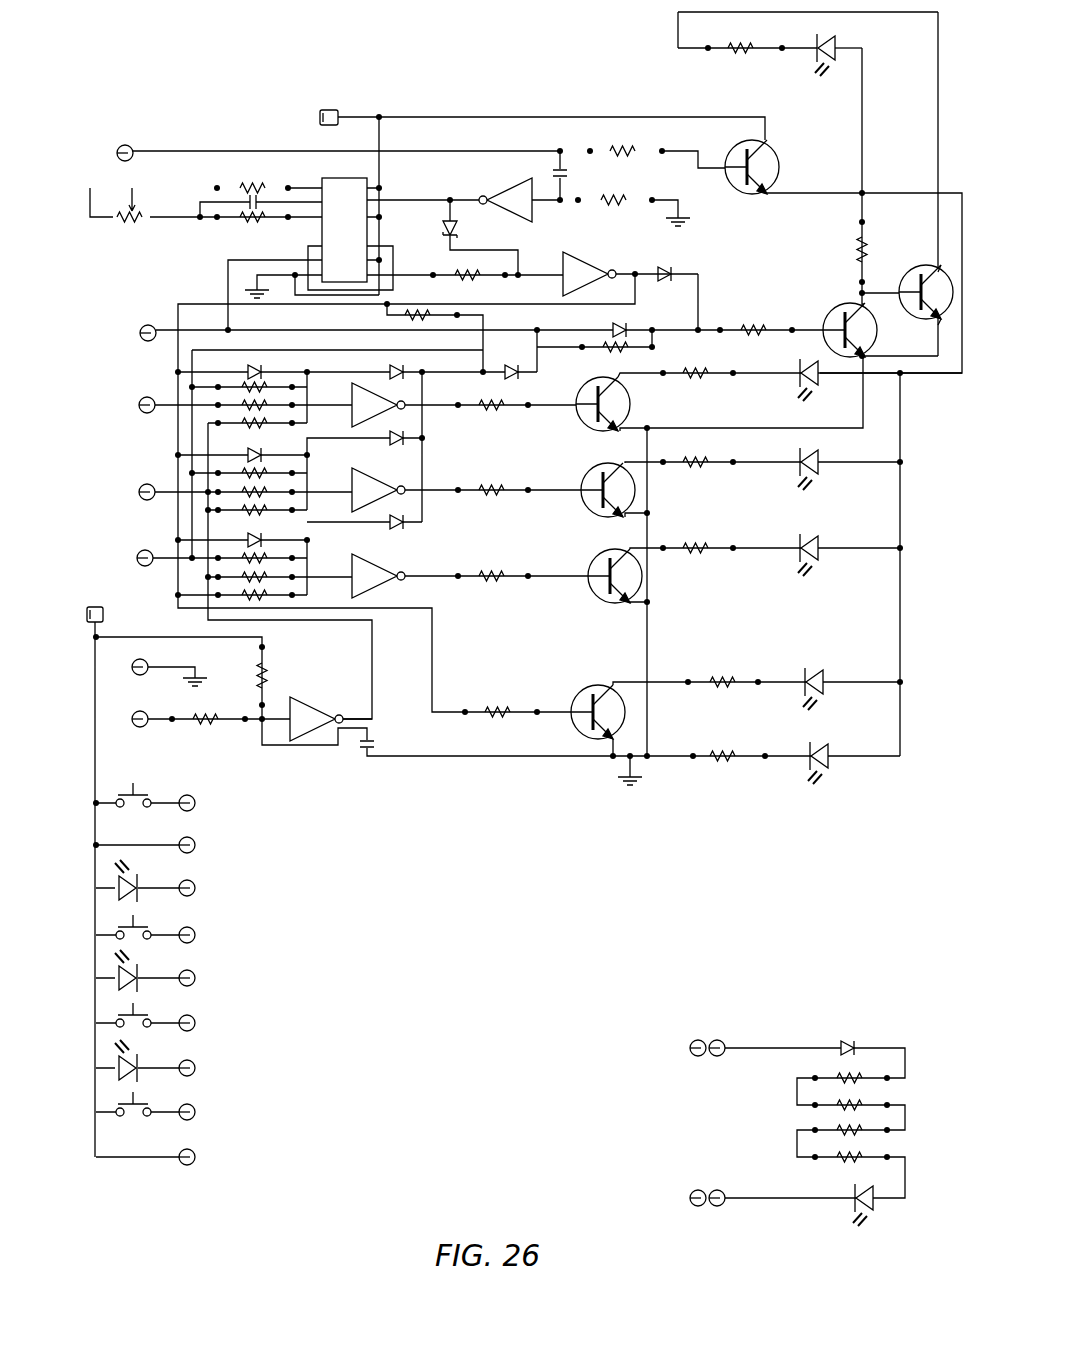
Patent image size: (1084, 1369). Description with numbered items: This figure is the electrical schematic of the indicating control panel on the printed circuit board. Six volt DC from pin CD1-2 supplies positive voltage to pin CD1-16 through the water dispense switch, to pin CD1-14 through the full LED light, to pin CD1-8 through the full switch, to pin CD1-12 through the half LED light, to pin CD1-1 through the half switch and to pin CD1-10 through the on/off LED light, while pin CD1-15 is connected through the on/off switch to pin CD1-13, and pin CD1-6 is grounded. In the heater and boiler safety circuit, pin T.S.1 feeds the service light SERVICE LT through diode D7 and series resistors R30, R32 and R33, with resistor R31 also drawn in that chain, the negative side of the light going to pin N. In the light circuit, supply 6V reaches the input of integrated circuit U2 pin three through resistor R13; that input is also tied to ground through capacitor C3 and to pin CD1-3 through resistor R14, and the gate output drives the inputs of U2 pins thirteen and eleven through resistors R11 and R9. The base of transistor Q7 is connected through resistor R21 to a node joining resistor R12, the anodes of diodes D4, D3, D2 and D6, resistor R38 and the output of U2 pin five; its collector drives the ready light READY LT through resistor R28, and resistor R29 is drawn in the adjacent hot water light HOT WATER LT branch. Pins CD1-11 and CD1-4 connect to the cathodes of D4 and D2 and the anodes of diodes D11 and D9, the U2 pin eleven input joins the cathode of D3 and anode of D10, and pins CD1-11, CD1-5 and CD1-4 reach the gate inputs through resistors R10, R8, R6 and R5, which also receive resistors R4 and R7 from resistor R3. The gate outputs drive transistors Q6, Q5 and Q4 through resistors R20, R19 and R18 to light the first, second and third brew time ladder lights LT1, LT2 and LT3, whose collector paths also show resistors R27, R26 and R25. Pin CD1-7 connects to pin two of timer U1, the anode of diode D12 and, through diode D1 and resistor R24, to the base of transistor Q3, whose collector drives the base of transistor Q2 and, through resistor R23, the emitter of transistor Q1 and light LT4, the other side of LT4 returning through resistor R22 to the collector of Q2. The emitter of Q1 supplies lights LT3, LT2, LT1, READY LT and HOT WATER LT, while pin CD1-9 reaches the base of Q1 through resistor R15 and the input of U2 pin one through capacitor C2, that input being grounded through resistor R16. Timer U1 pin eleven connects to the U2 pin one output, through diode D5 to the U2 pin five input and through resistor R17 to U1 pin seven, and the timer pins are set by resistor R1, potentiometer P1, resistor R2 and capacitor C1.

The six volt supply pin 6V is at (212, 367).
The connector pin CD1-9 is at (119, 144).
The resistor R1 is at (253, 181).
The resistor R2 is at (253, 225).
The capacitor C1 is at (214, 203).
The potentiometer P1 is at (130, 216).
The timer U1 is at (344, 230).
The connector pin CD1-7 is at (129, 324).
The resistor R38 is at (381, 317).
The capacitor C2 is at (547, 167).
The resistor R15 is at (665, 150).
The resistor R16 is at (639, 198).
The diode D5 is at (480, 237).
The resistor R17 is at (469, 285).
The diode D6 is at (666, 266).
The diode D1 is at (604, 321).
The resistor R3 is at (590, 342).
The resistor R24 is at (754, 320).
The integrated circuit U2 is at (453, 459).
The resistor R22 is at (747, 60).
The light LT4 is at (839, 61).
The transistor Q1 is at (767, 167).
The resistor R23 is at (841, 250).
The transistor Q2 is at (915, 293).
The transistor Q3 is at (865, 330).
The connector pin CD1-4 is at (140, 396).
The connector pin CD1-5 is at (140, 484).
The connector pin CD1-11 is at (126, 549).
The diode D2 is at (293, 370).
The diode D3 is at (293, 455).
The diode D4 is at (293, 540).
The resistor R4 is at (289, 388).
The resistor R5 is at (289, 405).
The resistor R6 is at (289, 422).
The resistor R7 is at (289, 473).
The resistor R8 is at (289, 491).
The resistor R9 is at (289, 510).
The resistor R10 is at (295, 558).
The resistor R11 is at (295, 576).
The resistor R12 is at (295, 595).
The diode D9 is at (405, 382).
The diode D10 is at (396, 448).
The diode D11 is at (402, 532).
The diode D12 is at (505, 381).
The resistor R18 is at (493, 414).
The resistor R19 is at (493, 481).
The resistor R20 is at (496, 567).
The transistor Q4 is at (601, 397).
The transistor Q5 is at (603, 481).
The transistor Q6 is at (610, 567).
The resistor R25 is at (698, 364).
The resistor R26 is at (698, 452).
The resistor R27 is at (698, 538).
The third brew time ladder light LT3 is at (802, 381).
The second time ladder light LT2 is at (807, 469).
The first brew time ladder light LT1 is at (809, 555).
The resistor R21 is at (501, 703).
The transistor Q7 is at (596, 706).
The resistor R28 is at (721, 673).
The resistor R29 is at (728, 747).
The ready light READY LT is at (843, 702).
The hot water light HOT WATER LT is at (876, 779).
The connector pin CD1-6 is at (140, 659).
The resistor R13 is at (282, 675).
The connector pin CD1-3 is at (181, 721).
The resistor R14 is at (213, 710).
The capacitor C3 is at (384, 740).
The connector pin CD1-16 is at (324, 796).
The connector pin CD1-2 is at (195, 838).
The connector pin CD1-14 is at (253, 881).
The connector pin CD1-8 is at (259, 928).
The connector pin CD1-12 is at (253, 971).
The connector pin CD1-1 is at (260, 1016).
The connector pin CD1-10 is at (267, 1061).
The connector pin CD1-15 is at (274, 1105).
The connector pin CD1-13 is at (207, 1150).
The safety circuit pin T.S.1 is at (691, 1059).
The diode D7 is at (856, 1039).
The resistor R30 is at (853, 1071).
The resistor R31 is at (853, 1098).
The resistor R32 is at (853, 1123).
The resistor R33 is at (853, 1150).
The service light SERVICE LT is at (810, 1202).
The neutral pin N is at (693, 1208).